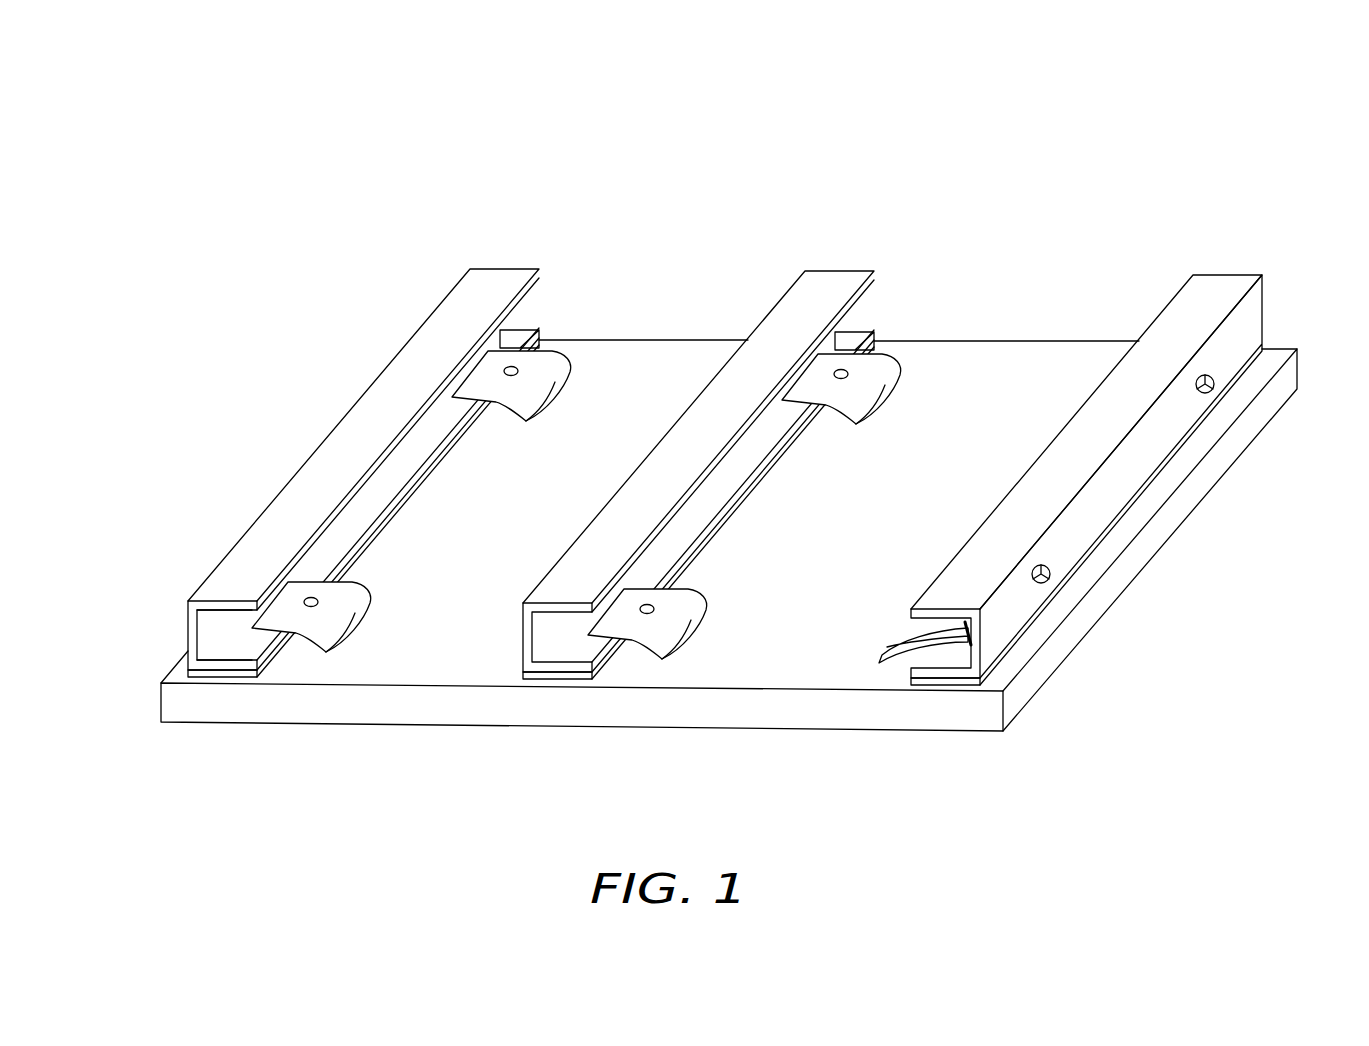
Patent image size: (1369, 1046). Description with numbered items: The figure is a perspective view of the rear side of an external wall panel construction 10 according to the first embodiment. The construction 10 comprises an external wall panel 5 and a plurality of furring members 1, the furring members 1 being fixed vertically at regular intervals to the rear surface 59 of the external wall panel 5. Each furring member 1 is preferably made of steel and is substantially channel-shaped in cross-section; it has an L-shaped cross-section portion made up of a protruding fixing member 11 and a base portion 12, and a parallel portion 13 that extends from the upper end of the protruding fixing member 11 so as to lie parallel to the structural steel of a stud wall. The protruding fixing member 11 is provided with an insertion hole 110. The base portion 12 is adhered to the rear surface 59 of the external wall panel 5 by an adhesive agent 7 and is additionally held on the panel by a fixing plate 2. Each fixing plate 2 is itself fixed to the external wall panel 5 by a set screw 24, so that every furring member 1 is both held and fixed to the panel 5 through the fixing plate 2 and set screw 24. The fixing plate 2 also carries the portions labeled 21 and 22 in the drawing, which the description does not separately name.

The external wall panel construction 10 is at (617, 156).
The furring member 1 is at (703, 514).
The external wall panel 5 is at (797, 705).
The rear surface 59 is at (649, 372).
The protruding fixing member 11 is at (188, 630).
The parallel portion 13 is at (222, 606).
The base portion 12 is at (222, 664).
The adhesive agent 7 is at (240, 672).
The fixing plate 2 is at (750, 300).
The curved portion of clip 21 is at (542, 412).
The hole of clip 22 is at (508, 365).
The set screw 24 is at (330, 652).
The insertion hole 110 is at (1213, 388).